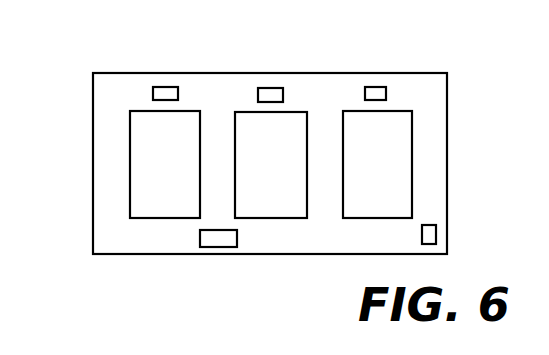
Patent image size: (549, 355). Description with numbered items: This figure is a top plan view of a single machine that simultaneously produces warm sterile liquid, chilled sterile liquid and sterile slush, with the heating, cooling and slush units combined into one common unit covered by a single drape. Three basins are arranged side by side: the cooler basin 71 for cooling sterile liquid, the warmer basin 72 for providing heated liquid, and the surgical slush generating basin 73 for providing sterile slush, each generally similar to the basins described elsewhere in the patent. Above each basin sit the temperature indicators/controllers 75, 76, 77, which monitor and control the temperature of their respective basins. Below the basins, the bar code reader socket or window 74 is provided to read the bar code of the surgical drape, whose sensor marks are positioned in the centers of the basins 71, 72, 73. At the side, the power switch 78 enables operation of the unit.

The cooler basin 71 is at (130, 144).
The warmer basin 72 is at (235, 125).
The surgical slush generating basin 73 is at (412, 144).
The bar code reader socket or window 74 is at (200, 233).
The temperature indicator/controller 75 is at (152, 94).
The temperature indicator/controller 76 is at (272, 88).
The temperature indicator/controller 77 is at (381, 87).
The power switch 78 is at (436, 235).